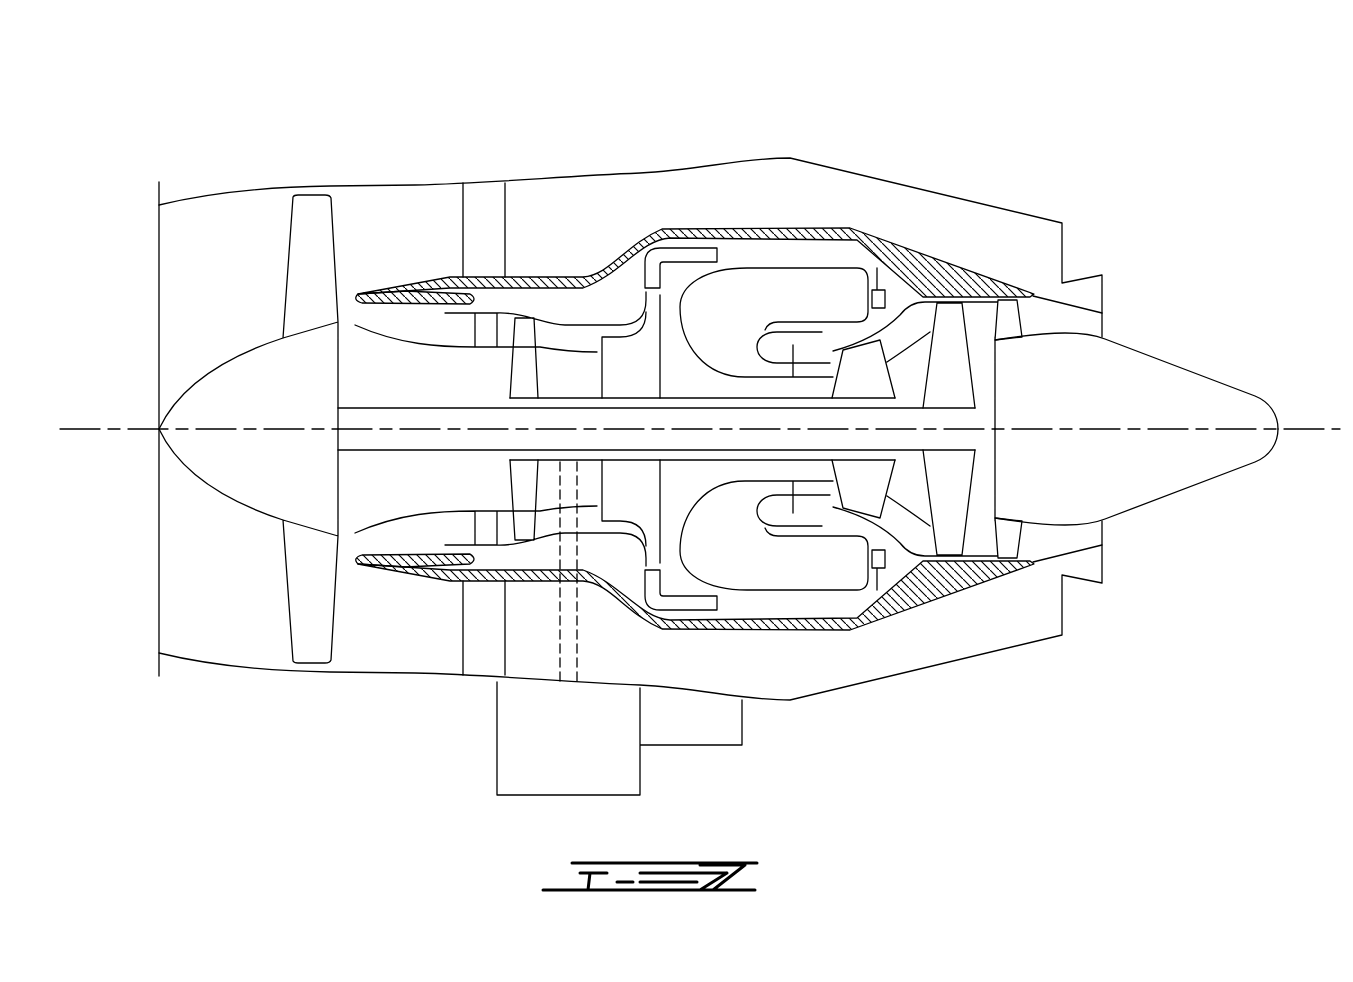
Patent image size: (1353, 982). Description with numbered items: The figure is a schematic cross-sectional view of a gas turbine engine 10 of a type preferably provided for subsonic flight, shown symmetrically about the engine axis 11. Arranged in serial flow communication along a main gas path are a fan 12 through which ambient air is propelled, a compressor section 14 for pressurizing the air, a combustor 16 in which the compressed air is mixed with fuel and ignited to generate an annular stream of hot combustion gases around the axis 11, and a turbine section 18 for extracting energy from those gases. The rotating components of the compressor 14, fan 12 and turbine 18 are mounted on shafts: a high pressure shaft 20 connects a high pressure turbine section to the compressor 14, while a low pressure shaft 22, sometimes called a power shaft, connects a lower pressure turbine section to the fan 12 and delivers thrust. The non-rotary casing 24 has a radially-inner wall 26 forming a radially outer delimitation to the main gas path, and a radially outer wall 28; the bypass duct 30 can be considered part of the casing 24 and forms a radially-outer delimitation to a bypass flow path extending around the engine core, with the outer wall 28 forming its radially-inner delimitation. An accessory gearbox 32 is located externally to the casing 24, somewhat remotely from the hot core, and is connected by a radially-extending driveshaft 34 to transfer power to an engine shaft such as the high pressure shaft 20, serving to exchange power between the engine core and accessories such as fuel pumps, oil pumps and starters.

The gas turbine engine 10 is at (878, 156).
The engine axis 11 is at (1315, 429).
The fan 12 is at (307, 582).
The compressor section 14 is at (560, 330).
The combustor 16 is at (777, 288).
The turbine section 18 is at (907, 497).
The high pressure shaft 20 is at (783, 400).
The low pressure shaft 22 is at (403, 452).
The casing 24 is at (815, 231).
The radially-inner wall 26 is at (517, 278).
The radially outer wall 28 is at (654, 230).
The bypass duct 30 is at (415, 185).
The accessory gearbox 32 is at (620, 765).
The driveshaft 34 is at (560, 637).